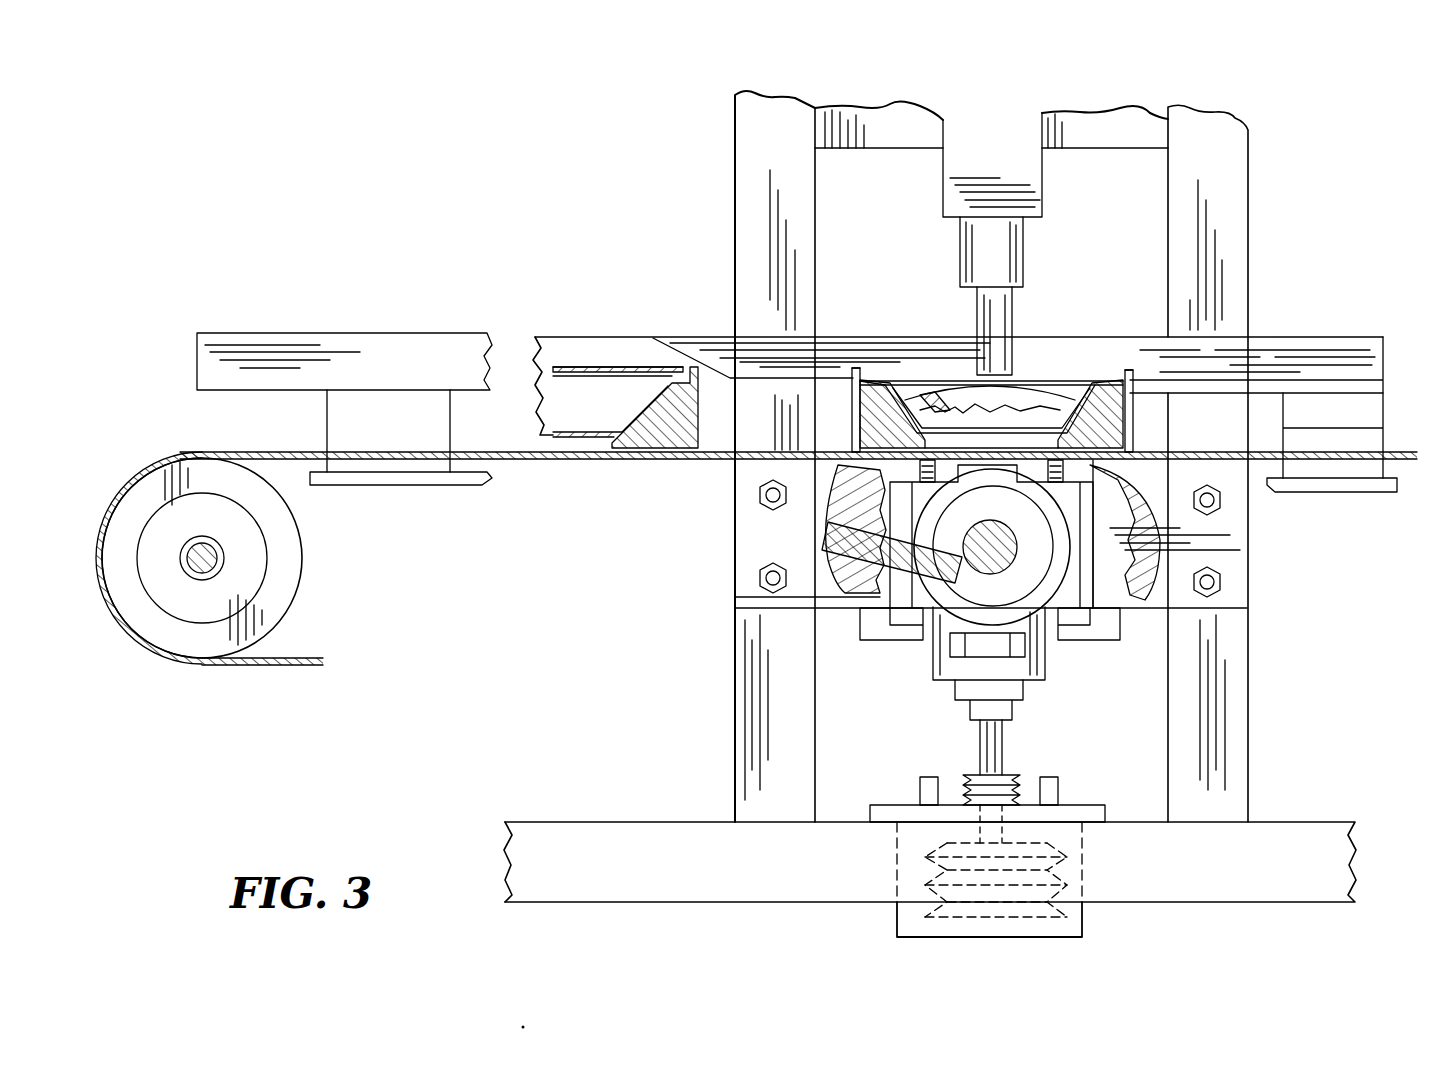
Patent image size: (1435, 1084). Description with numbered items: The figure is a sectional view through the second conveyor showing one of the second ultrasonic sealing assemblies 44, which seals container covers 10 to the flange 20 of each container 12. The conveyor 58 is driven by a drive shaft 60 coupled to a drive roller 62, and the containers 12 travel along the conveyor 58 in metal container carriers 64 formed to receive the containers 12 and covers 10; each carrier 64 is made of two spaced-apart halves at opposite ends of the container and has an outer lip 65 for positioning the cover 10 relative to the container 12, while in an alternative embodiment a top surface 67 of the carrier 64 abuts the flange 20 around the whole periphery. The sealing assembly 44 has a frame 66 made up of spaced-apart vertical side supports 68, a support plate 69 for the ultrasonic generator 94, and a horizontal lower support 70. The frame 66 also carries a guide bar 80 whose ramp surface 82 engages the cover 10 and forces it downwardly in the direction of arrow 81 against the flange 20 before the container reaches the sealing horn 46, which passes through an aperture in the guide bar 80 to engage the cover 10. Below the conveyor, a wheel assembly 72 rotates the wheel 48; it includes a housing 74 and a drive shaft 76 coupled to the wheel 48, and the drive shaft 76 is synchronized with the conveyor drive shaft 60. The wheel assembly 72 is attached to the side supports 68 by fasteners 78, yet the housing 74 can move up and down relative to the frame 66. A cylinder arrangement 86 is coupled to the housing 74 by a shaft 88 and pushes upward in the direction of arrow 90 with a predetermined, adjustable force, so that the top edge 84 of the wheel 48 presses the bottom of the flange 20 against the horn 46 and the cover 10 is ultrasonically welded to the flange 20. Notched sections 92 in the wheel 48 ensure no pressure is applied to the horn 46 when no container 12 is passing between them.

The container cover 10 is at (632, 358).
The container 12 is at (578, 405).
The container flange 20 is at (1135, 410).
The second ultrasonic sealing assembly 44 is at (992, 142).
The sealing horn 46 is at (995, 309).
The wheel 48 is at (1160, 530).
The conveyor 58 is at (503, 460).
The drive shaft 60 is at (218, 562).
The drive roller 62 is at (232, 558).
The container carrier 64 is at (668, 452).
The outer lip 65 is at (856, 372).
The frame 66 is at (1275, 272).
The top surface 67 is at (872, 355).
The vertical side support 68 is at (745, 738).
The support plate 69 is at (872, 130).
The horizontal lower support 70 is at (1265, 840).
The wheel assembly 72 is at (890, 658).
The housing 74 is at (937, 668).
The drive shaft 76 is at (1000, 555).
The fasteners 78 is at (758, 582).
The guide bar 80 is at (866, 345).
The arrow 81 is at (712, 348).
The ramp surface 82 is at (648, 345).
The top edge of wheel 84 is at (826, 545).
The cylinder arrangement 86 is at (885, 856).
The shaft 88 is at (995, 752).
The arrow 90 is at (955, 725).
The notched sections 92 is at (836, 503).
The ultrasonic generator 94 is at (990, 150).